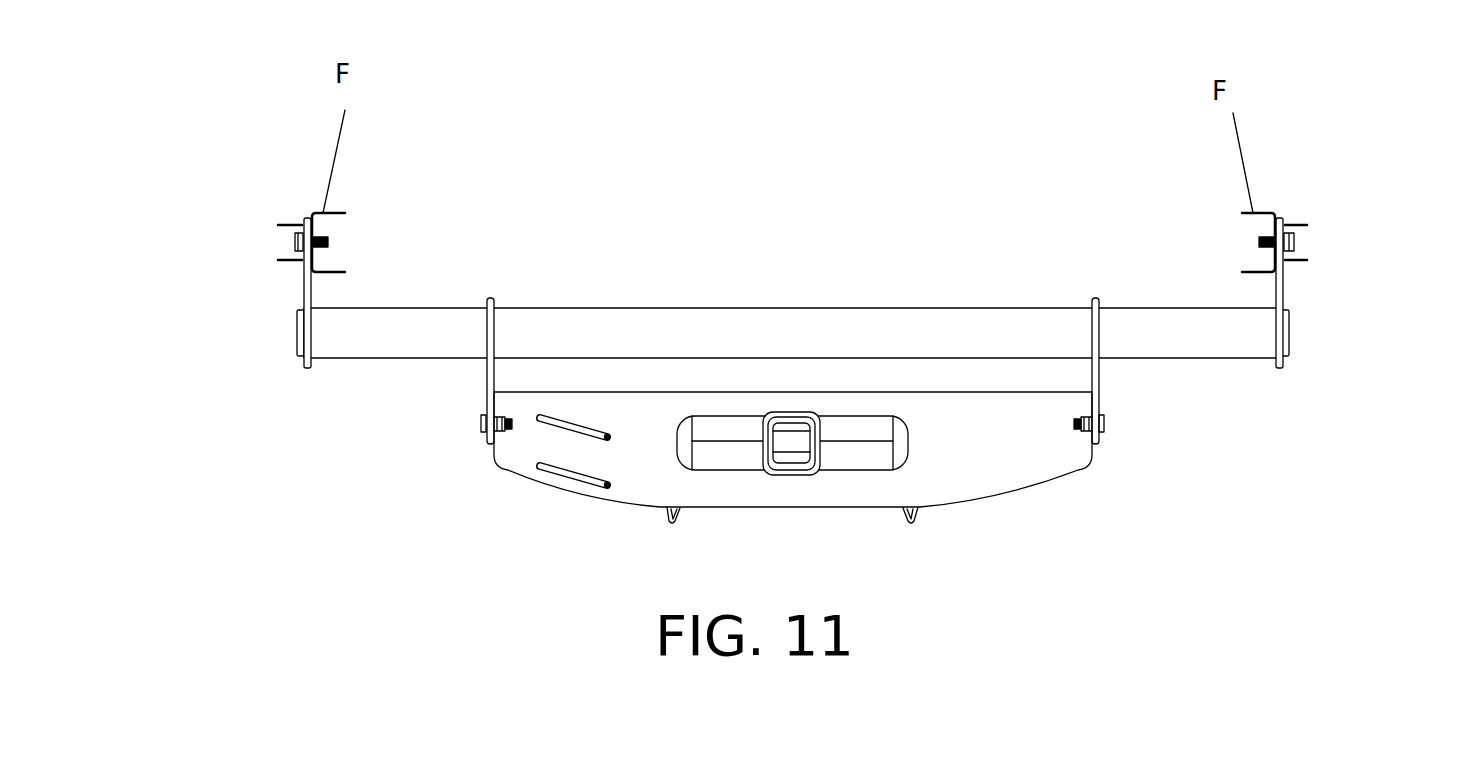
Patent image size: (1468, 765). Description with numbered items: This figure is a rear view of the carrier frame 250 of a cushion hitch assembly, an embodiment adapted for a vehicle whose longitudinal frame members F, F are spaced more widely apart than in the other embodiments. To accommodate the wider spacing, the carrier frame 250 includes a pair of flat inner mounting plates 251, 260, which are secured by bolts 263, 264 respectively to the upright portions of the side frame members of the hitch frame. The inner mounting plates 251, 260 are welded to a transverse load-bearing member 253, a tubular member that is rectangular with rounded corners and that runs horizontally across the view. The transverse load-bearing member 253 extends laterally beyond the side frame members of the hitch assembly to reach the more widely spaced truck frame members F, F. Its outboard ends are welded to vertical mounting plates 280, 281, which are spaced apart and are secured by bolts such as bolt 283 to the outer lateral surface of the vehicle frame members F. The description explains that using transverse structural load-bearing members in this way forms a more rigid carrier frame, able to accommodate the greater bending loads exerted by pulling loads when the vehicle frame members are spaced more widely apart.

The carrier frame 250 is at (743, 303).
The inner mounting plate 251 is at (1100, 387).
The transverse load-bearing member 253 is at (952, 337).
The inner mounting plate 260 is at (485, 370).
The bolt 263 is at (1107, 423).
The bolt 264 is at (478, 427).
The vertical mounting plate 280 is at (1285, 292).
The vertical mounting plate 281 is at (298, 290).
The bolt 283 is at (330, 241).